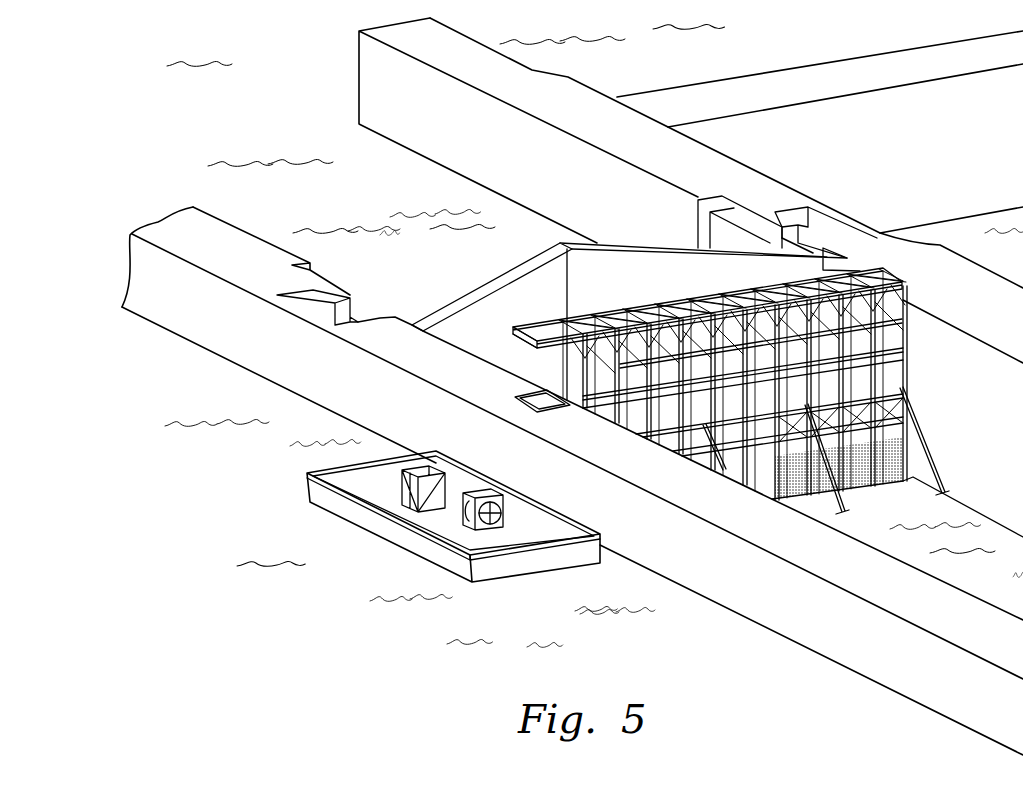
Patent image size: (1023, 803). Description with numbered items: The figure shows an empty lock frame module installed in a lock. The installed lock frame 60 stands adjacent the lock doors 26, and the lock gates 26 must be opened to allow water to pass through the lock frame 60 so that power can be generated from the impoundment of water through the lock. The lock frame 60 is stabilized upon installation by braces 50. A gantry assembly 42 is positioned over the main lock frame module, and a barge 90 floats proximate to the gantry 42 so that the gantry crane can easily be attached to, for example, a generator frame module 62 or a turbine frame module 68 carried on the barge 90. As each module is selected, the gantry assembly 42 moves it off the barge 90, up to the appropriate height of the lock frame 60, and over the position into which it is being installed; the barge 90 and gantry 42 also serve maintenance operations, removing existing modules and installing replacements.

The lock doors 26 is at (483, 283).
The gantry assembly 42 is at (530, 336).
The braces 50 is at (927, 452).
The lock frame 60 is at (883, 270).
The generator frame module 62 is at (423, 482).
The turbine frame module 68 is at (483, 487).
The barge 90 is at (515, 560).